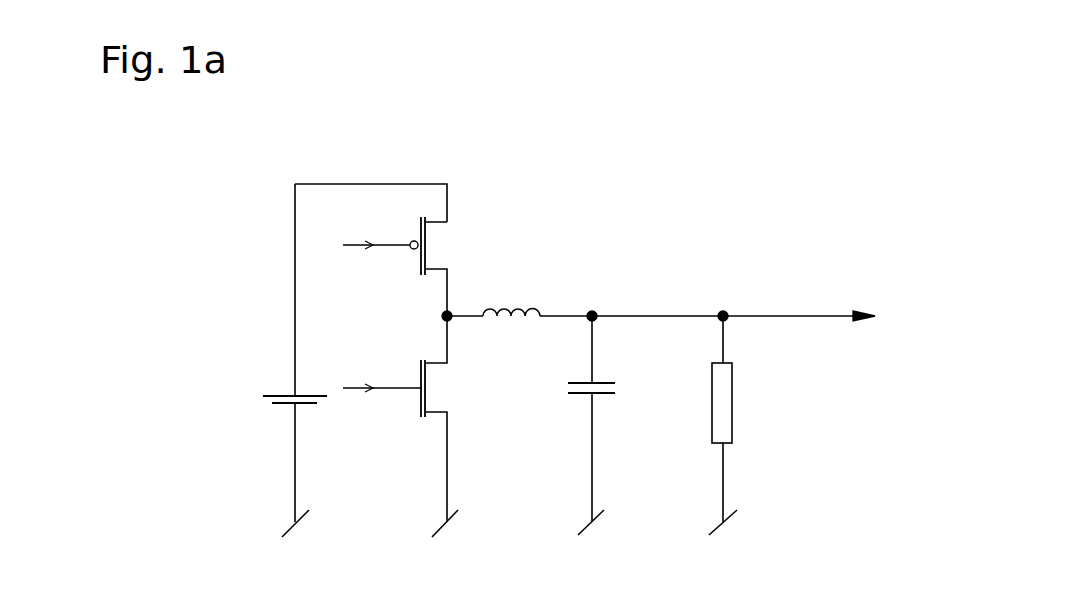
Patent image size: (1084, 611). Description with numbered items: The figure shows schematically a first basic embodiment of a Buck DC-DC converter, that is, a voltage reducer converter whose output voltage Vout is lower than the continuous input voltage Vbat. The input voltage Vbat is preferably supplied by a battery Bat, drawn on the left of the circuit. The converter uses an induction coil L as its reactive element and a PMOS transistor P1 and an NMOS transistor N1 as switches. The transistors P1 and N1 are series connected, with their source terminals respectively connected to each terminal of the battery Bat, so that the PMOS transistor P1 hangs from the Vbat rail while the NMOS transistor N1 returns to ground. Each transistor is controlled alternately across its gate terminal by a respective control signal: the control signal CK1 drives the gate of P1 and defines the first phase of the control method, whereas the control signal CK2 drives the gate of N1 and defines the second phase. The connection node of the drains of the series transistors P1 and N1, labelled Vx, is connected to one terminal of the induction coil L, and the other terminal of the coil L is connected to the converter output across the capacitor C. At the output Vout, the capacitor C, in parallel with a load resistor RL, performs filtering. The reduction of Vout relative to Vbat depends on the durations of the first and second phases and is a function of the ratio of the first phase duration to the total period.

The battery Bat is at (286, 360).
The input voltage Vbat is at (371, 187).
The PMOS transistor P1 is at (437, 266).
The control signal CK1 is at (376, 233).
The NMOS transistor N1 is at (444, 426).
The control signal CK2 is at (382, 376).
The switching node voltage Vx is at (440, 312).
The induction coil L is at (537, 295).
The capacitor C is at (593, 423).
The load resistor RL is at (684, 423).
The output voltage Vout is at (818, 300).